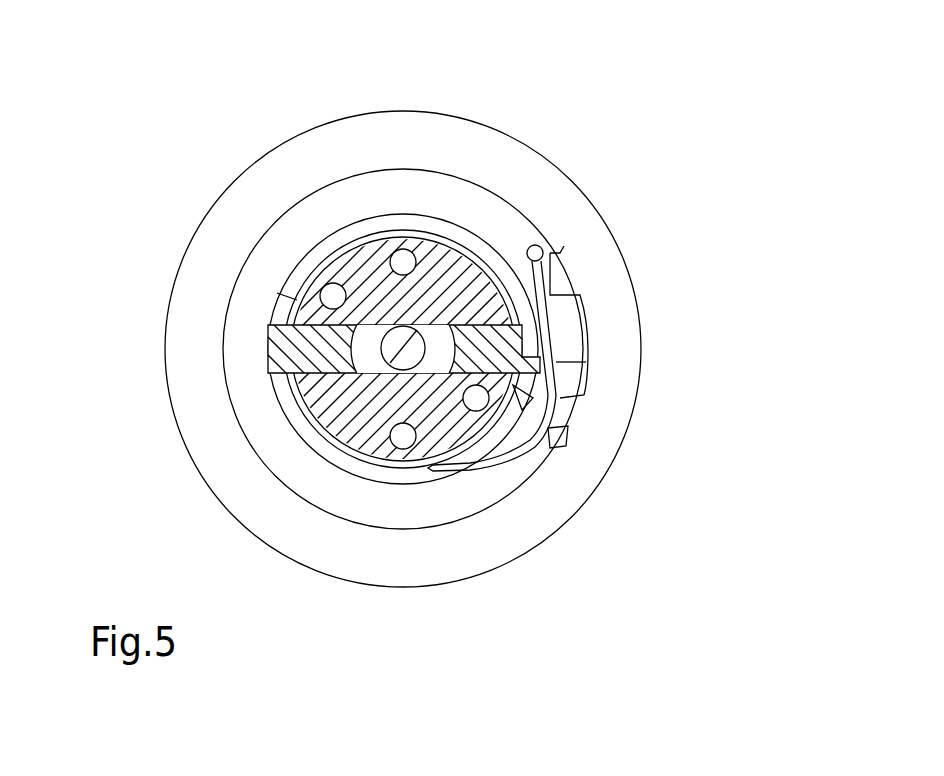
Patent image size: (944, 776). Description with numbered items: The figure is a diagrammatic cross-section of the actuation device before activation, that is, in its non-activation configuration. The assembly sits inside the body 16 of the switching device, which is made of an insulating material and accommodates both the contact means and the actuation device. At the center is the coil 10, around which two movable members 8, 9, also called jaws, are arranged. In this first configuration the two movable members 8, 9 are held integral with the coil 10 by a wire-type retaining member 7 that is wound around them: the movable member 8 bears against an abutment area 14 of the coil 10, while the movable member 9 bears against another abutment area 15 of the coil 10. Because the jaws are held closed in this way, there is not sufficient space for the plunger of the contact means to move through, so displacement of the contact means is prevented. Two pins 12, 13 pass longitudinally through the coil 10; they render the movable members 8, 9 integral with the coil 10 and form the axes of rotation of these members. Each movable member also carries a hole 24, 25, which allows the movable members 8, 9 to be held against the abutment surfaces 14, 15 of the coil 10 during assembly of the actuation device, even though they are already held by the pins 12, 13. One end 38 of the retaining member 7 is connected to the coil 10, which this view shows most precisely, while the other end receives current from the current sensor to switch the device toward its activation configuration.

The retaining member 7 is at (553, 450).
The movable member 8 is at (347, 415).
The movable member 9 is at (458, 272).
The coil 10 is at (297, 233).
The pin 12 is at (333, 283).
The pin 13 is at (485, 410).
The abutment area 14 is at (290, 345).
The abutment area 15 is at (510, 357).
The body 16 is at (556, 192).
The hole 24 is at (403, 449).
The hole 25 is at (403, 249).
The end of retaining member 38 is at (560, 238).